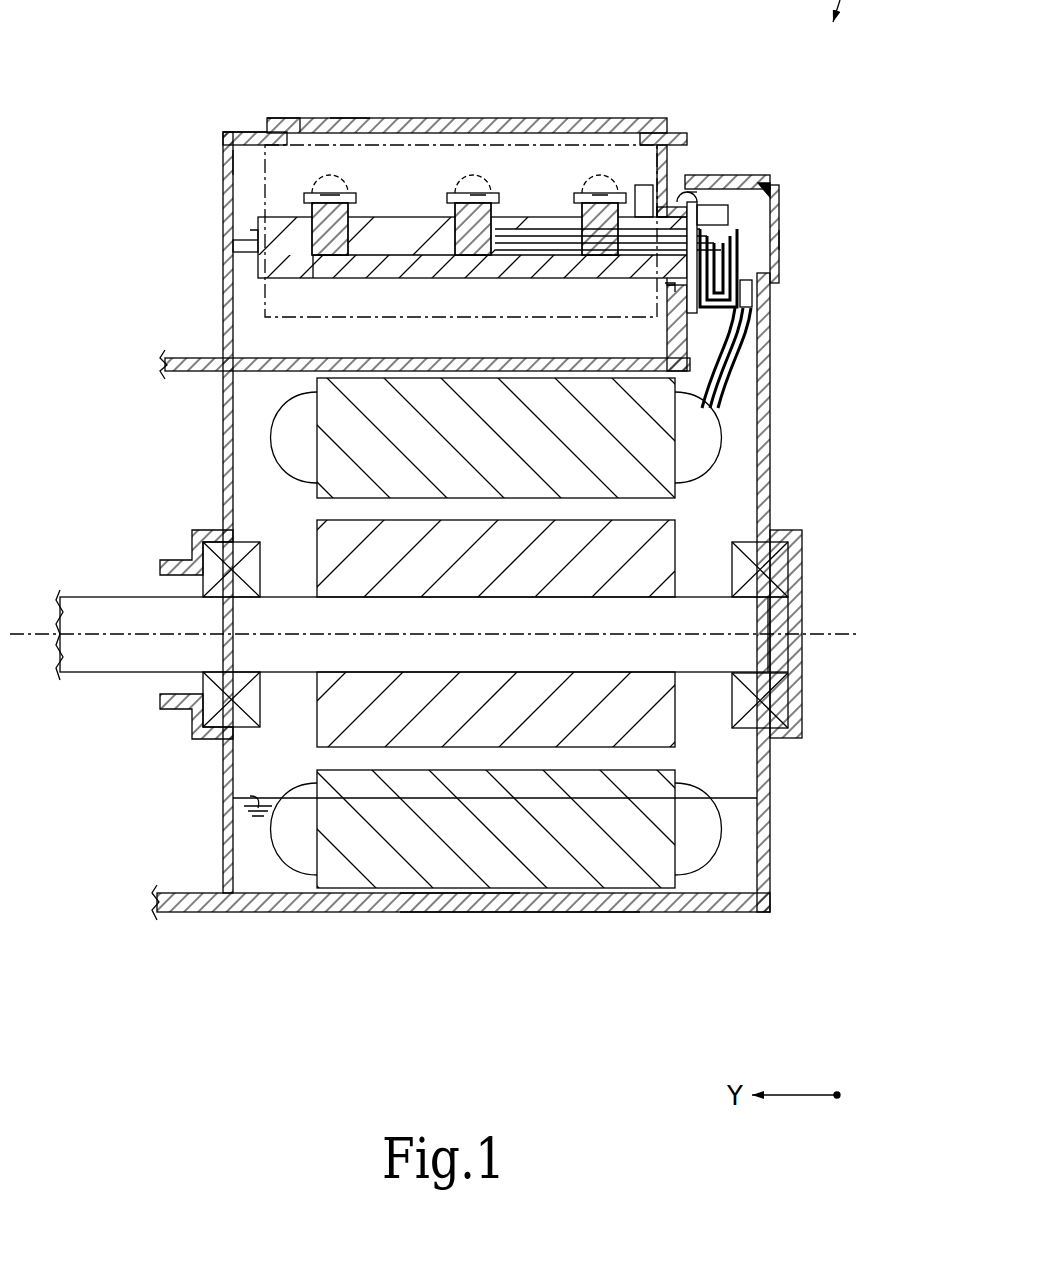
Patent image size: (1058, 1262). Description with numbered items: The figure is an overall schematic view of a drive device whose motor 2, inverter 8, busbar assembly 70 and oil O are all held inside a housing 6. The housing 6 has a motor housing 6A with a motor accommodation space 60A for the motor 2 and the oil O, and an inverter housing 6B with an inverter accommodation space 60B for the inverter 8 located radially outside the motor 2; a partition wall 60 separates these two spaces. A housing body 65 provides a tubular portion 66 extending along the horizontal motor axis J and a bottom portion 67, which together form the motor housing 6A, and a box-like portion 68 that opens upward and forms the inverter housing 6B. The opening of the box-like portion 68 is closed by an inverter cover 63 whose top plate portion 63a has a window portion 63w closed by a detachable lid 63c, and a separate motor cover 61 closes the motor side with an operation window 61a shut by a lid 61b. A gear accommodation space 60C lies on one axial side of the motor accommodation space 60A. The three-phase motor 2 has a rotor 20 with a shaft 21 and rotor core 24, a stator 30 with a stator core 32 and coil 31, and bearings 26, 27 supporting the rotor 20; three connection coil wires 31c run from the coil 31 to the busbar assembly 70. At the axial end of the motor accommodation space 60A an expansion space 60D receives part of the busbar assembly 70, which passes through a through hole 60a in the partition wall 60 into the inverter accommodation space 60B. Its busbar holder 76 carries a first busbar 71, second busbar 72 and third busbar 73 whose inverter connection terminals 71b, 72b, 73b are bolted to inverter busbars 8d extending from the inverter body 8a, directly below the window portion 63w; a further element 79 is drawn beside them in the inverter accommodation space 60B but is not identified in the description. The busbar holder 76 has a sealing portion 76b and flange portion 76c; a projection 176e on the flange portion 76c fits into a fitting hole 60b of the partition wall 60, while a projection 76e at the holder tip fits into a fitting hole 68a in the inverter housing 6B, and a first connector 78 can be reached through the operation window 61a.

The motor 2 is at (724, 864).
The housing 6 is at (112, 303).
The motor housing 6A is at (222, 386).
The inverter housing 6B is at (222, 313).
The inverter 8 is at (246, 180).
The inverter body 8a is at (232, 162).
The inverter busbar 8d is at (333, 188).
The rotor 20 is at (684, 752).
The shaft 21 is at (762, 644).
The rotor core 24 is at (692, 728).
The bearing 26 is at (786, 712).
The bearing 27 is at (200, 705).
The stator 30 is at (690, 890).
The coil 31 is at (708, 450).
The connection coil wire 31c is at (750, 353).
The stator core 32 is at (617, 875).
The partition wall 60 is at (693, 200).
The motor accommodation space 60A is at (268, 874).
The inverter accommodation space 60B is at (242, 297).
The gear accommodation space 60C is at (198, 864).
The expansion space 60D is at (745, 176).
The through hole 60a is at (688, 292).
The fitting hole 60b is at (690, 202).
The motor cover 61 is at (773, 824).
The operation window 61a is at (782, 198).
The lid 61b is at (782, 240).
The inverter cover 63 is at (452, 116).
The top plate portion 63a is at (240, 133).
The lid 63c is at (352, 120).
The window portion 63w is at (302, 120).
The housing body 65 is at (516, 915).
The tubular portion 66 is at (456, 902).
The bottom portion 67 is at (226, 436).
The box-like portion 68 is at (236, 196).
The fitting hole 68a is at (234, 246).
The busbar assembly 70 is at (533, 210).
The first busbar 71 is at (402, 257).
The inverter connection terminal 71b is at (340, 240).
The second busbar 72 is at (517, 248).
The inverter connection terminal 72b is at (486, 240).
The third busbar 73 is at (606, 192).
The inverter connection terminal 73b is at (611, 240).
The busbar holder 76 is at (488, 200).
The sealing portion 76b is at (692, 198).
The flange portion 76c is at (700, 300).
The projection 76e is at (252, 236).
The first connector 78 is at (732, 214).
The capacitor 79 is at (648, 185).
The projection 176e is at (702, 194).
The motor axis J is at (856, 634).
The oil O is at (250, 796).